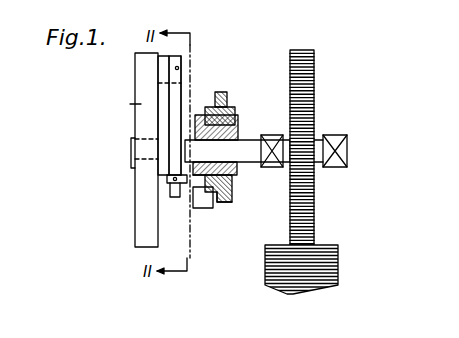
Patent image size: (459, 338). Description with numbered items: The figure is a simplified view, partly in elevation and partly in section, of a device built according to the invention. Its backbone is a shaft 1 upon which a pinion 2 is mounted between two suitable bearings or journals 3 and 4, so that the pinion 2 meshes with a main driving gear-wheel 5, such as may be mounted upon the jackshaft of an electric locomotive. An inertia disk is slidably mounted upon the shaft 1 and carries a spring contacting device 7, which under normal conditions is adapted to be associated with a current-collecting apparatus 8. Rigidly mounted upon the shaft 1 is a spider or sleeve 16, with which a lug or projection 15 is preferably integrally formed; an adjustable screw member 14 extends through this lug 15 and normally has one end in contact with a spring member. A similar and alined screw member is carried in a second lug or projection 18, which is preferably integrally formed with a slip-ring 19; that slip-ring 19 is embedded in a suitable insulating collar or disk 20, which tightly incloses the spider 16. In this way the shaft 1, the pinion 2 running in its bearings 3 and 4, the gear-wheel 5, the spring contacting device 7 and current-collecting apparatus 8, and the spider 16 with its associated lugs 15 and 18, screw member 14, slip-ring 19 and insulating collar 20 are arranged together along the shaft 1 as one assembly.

The shaft 1 is at (240, 142).
The pinion 2 is at (314, 74).
The bearing 3 is at (268, 138).
The bearing 4 is at (335, 138).
The main driving gear-wheel 5 is at (332, 248).
The spring contacting device 7 is at (208, 71).
The current-collecting apparatus 8 is at (250, 97).
The adjustable screw member 14 is at (177, 199).
The lug 15 is at (172, 186).
The spider 16 is at (232, 171).
The lug 18 is at (207, 206).
The slip-ring 19 is at (224, 197).
The insulating collar 20 is at (233, 188).